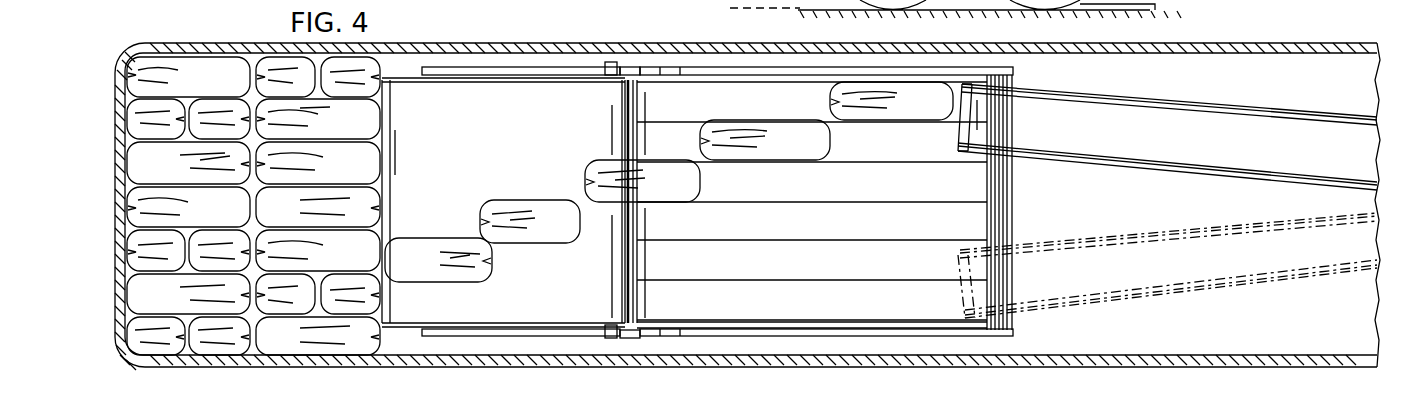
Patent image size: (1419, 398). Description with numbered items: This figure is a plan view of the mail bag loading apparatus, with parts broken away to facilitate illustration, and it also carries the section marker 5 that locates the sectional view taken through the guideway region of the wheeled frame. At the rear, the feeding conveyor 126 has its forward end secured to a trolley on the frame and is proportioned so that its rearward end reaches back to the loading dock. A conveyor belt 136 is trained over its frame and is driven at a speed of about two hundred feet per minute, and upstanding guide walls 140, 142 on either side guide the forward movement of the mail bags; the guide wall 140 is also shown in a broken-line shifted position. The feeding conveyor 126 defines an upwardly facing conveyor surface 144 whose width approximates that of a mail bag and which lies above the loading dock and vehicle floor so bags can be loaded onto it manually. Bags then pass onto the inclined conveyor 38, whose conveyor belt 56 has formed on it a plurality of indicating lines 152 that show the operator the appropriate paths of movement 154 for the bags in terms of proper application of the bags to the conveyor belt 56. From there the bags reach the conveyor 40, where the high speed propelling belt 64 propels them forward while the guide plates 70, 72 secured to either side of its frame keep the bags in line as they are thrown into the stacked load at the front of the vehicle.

The conveyor 38 is at (794, 106).
The conveyor 40 is at (536, 104).
The conveyor belt 56 is at (688, 92).
The high speed propelling belt 64 is at (468, 95).
The guide plate 70 is at (540, 325).
The guide plate 72 is at (575, 78).
The feeding conveyor 126 is at (1167, 134).
The conveyor belt 136 is at (1258, 128).
The guide wall 140 is at (1170, 170).
The guide wall 142 is at (1198, 107).
The conveyor surface 144 is at (1330, 150).
The indicating lines 152 is at (705, 128).
The paths of movement 154 is at (650, 300).
The section line 5- 5 is at (915, 300).